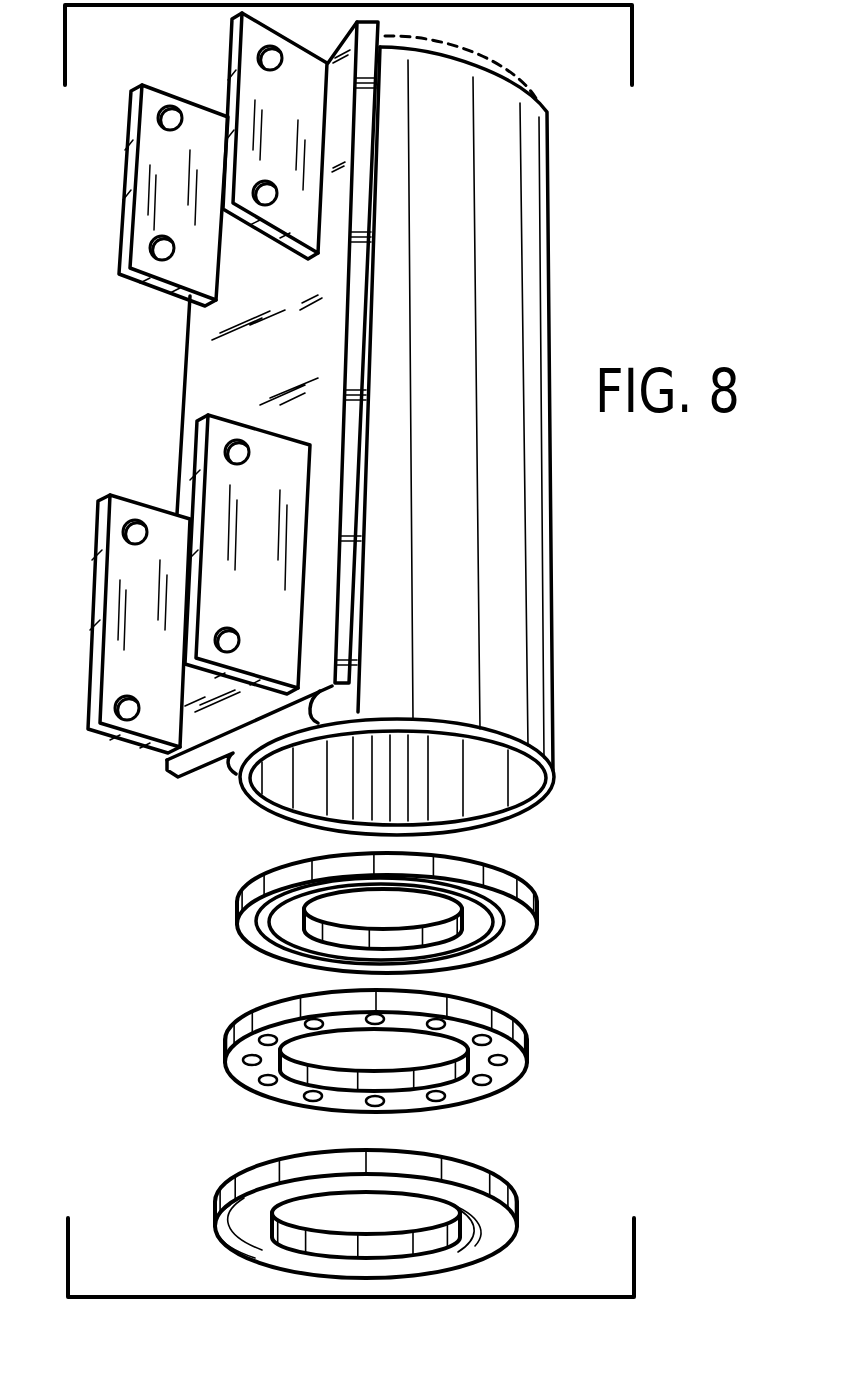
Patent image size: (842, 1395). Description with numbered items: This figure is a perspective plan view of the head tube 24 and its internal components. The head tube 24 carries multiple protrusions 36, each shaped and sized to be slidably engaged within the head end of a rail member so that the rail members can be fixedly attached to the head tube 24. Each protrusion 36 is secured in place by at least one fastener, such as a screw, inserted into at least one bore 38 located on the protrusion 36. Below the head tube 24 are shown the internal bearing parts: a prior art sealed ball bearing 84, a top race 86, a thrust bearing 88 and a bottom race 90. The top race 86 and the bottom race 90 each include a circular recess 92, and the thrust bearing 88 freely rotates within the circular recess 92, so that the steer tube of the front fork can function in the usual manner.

The head tube 24 is at (540, 609).
The protrusion 36 is at (258, 85).
The bore 38 is at (165, 122).
The sealed ball bearing 84 is at (492, 66).
The top race 86 is at (537, 912).
The thrust bearing 88 is at (525, 1052).
The bottom race 90 is at (515, 1215).
The circular recess 92 is at (257, 912).